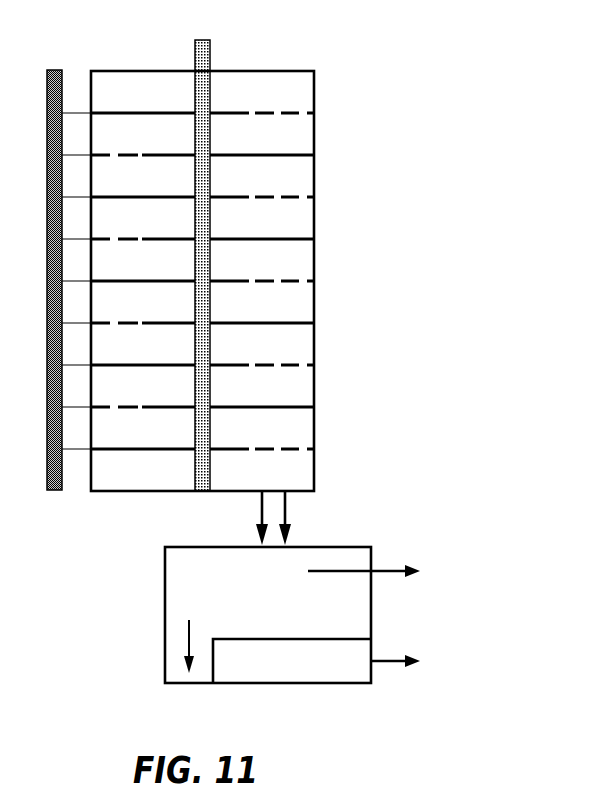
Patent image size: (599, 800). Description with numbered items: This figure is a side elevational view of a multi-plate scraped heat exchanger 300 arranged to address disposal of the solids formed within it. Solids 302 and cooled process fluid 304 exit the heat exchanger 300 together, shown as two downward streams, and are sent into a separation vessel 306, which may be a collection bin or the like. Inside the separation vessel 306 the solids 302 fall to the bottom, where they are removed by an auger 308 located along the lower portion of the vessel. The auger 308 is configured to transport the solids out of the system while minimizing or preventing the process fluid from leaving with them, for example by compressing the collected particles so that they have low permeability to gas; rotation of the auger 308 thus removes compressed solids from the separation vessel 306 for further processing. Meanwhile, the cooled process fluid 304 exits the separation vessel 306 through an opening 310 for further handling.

The heat exchanger 300 is at (458, 226).
The solids 302 is at (258, 512).
The cooled process fluid 304 is at (289, 512).
The separation vessel 306 is at (182, 574).
The auger 308 is at (288, 683).
The opening 310 is at (381, 575).